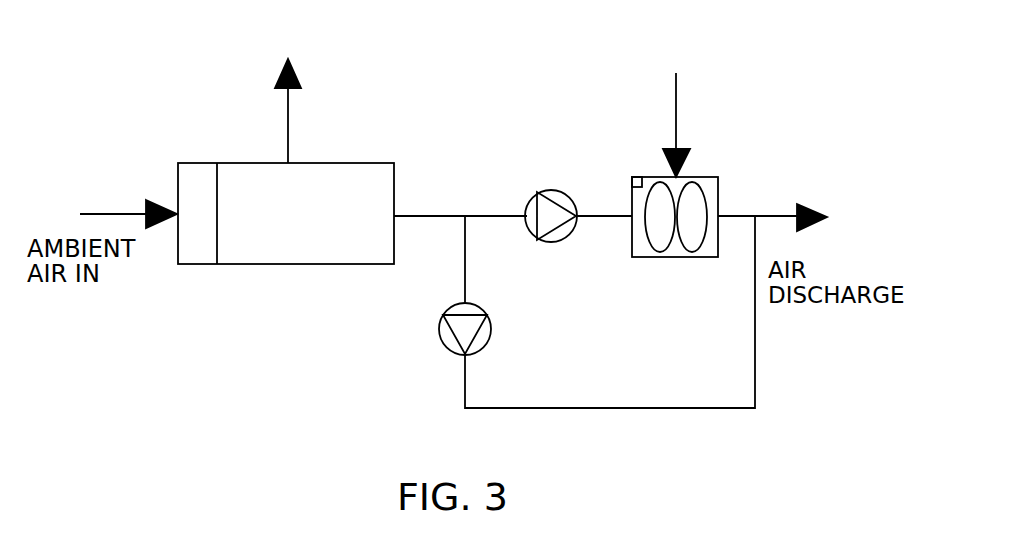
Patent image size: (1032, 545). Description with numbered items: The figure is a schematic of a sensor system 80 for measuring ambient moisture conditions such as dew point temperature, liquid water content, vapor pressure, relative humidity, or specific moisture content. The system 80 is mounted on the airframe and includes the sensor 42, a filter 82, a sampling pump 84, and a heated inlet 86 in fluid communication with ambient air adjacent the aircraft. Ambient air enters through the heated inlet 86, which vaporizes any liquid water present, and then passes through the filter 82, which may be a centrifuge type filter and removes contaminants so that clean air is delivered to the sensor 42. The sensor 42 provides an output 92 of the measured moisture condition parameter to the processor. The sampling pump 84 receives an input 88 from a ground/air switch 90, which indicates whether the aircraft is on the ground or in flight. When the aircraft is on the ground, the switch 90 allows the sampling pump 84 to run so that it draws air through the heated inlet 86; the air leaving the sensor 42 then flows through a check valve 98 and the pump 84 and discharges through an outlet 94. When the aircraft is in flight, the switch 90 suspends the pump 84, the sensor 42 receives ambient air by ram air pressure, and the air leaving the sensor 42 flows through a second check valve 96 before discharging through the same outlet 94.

The sensor 42 is at (277, 230).
The sensor system 80 is at (223, 367).
The filter 82 is at (200, 258).
The sampling pump 84 is at (705, 178).
The heated inlet 86 is at (112, 213).
The input 88 is at (676, 93).
The ground/air switch 90 is at (634, 177).
The output 92 is at (305, 51).
The outlet 94 is at (777, 216).
The check valve 96 is at (438, 329).
The check valve 98 is at (527, 200).